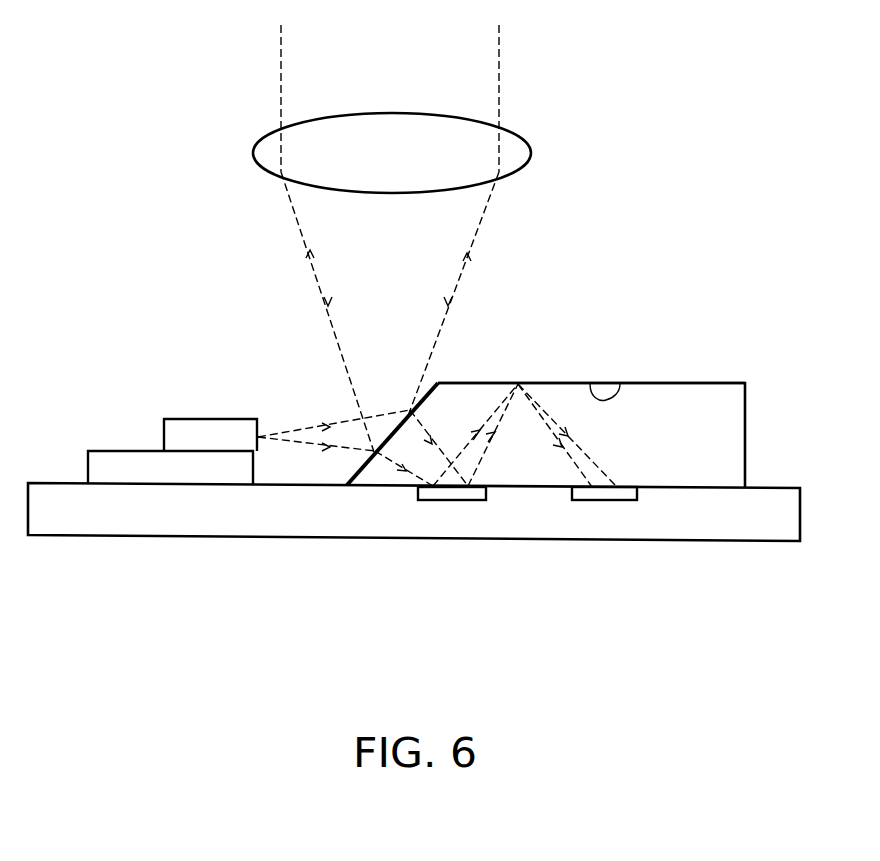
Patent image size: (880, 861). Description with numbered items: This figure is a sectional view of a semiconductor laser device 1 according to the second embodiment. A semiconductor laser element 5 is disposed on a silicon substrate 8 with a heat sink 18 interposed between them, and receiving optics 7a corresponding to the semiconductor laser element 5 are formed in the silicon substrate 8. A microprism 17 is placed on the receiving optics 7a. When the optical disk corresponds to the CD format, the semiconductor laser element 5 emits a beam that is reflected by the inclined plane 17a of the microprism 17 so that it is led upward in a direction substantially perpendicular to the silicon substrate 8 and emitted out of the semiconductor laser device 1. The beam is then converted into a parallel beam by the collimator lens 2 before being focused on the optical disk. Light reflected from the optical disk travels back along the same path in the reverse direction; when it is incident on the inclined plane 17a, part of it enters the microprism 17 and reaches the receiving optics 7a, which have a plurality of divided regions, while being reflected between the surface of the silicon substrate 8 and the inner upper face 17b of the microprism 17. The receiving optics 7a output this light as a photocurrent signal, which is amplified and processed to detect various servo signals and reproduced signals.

The semiconductor laser device 1 is at (544, 345).
The collimator lens 2 is at (522, 139).
The semiconductor laser element 5 is at (183, 420).
The receiving optics 7a is at (450, 500).
The silicon substrate 8 is at (715, 532).
The microprism 17 is at (658, 393).
The inclined plane 17a is at (353, 471).
The inner upper face 17b is at (620, 384).
The heat sink 18 is at (102, 450).